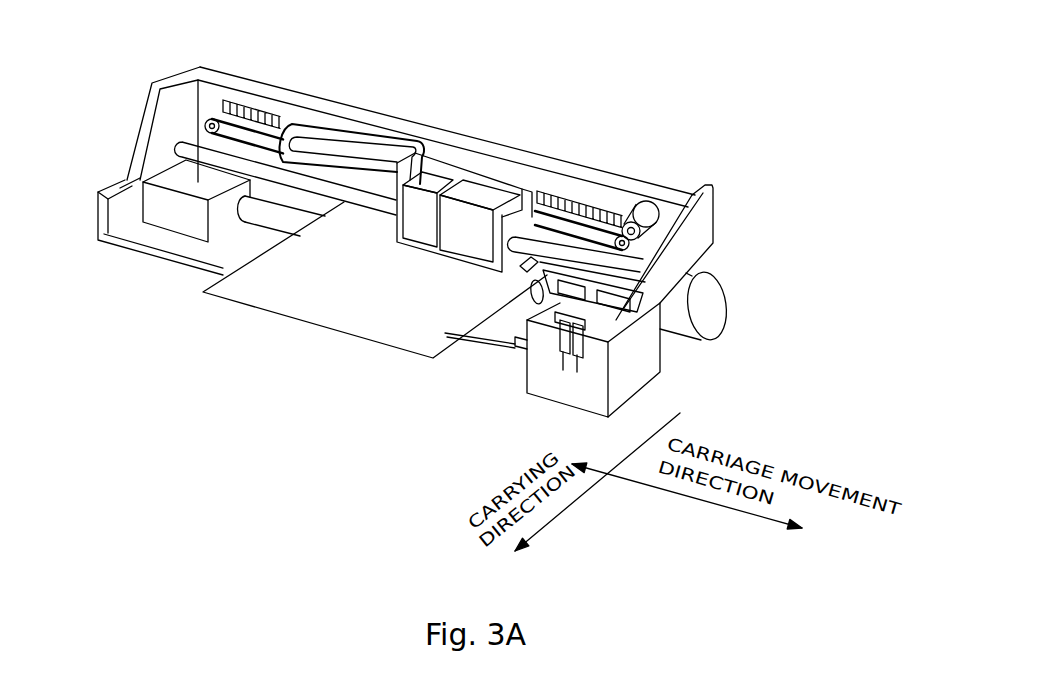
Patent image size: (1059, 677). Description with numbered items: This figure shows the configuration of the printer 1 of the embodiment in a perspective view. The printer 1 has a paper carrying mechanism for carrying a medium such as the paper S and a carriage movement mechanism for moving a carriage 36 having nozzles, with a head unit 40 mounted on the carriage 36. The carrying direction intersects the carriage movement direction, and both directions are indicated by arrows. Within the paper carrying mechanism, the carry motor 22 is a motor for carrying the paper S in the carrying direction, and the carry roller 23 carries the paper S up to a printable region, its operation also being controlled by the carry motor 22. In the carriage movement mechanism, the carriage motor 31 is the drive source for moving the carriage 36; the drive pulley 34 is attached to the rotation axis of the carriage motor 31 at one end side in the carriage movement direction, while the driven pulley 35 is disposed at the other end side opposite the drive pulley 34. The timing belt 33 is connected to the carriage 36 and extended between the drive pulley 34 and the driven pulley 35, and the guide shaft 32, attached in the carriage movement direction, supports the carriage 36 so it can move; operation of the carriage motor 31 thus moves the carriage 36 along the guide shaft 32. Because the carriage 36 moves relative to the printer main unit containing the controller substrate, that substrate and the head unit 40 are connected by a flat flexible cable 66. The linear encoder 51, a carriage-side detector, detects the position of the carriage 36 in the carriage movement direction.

The printer 1 is at (604, 85).
The carry motor 22 is at (712, 308).
The carry roller 23 is at (262, 226).
The carriage motor 31 is at (647, 213).
The guide shaft 32 is at (320, 192).
The timing belt 33 is at (279, 138).
The drive pulley 34 is at (650, 208).
The driven pulley 35 is at (211, 119).
The carriage 36 is at (533, 196).
The head unit 40 is at (521, 274).
The linear encoder 51 is at (262, 110).
The flat flexible cable 66 is at (368, 132).
The paper S is at (367, 321).